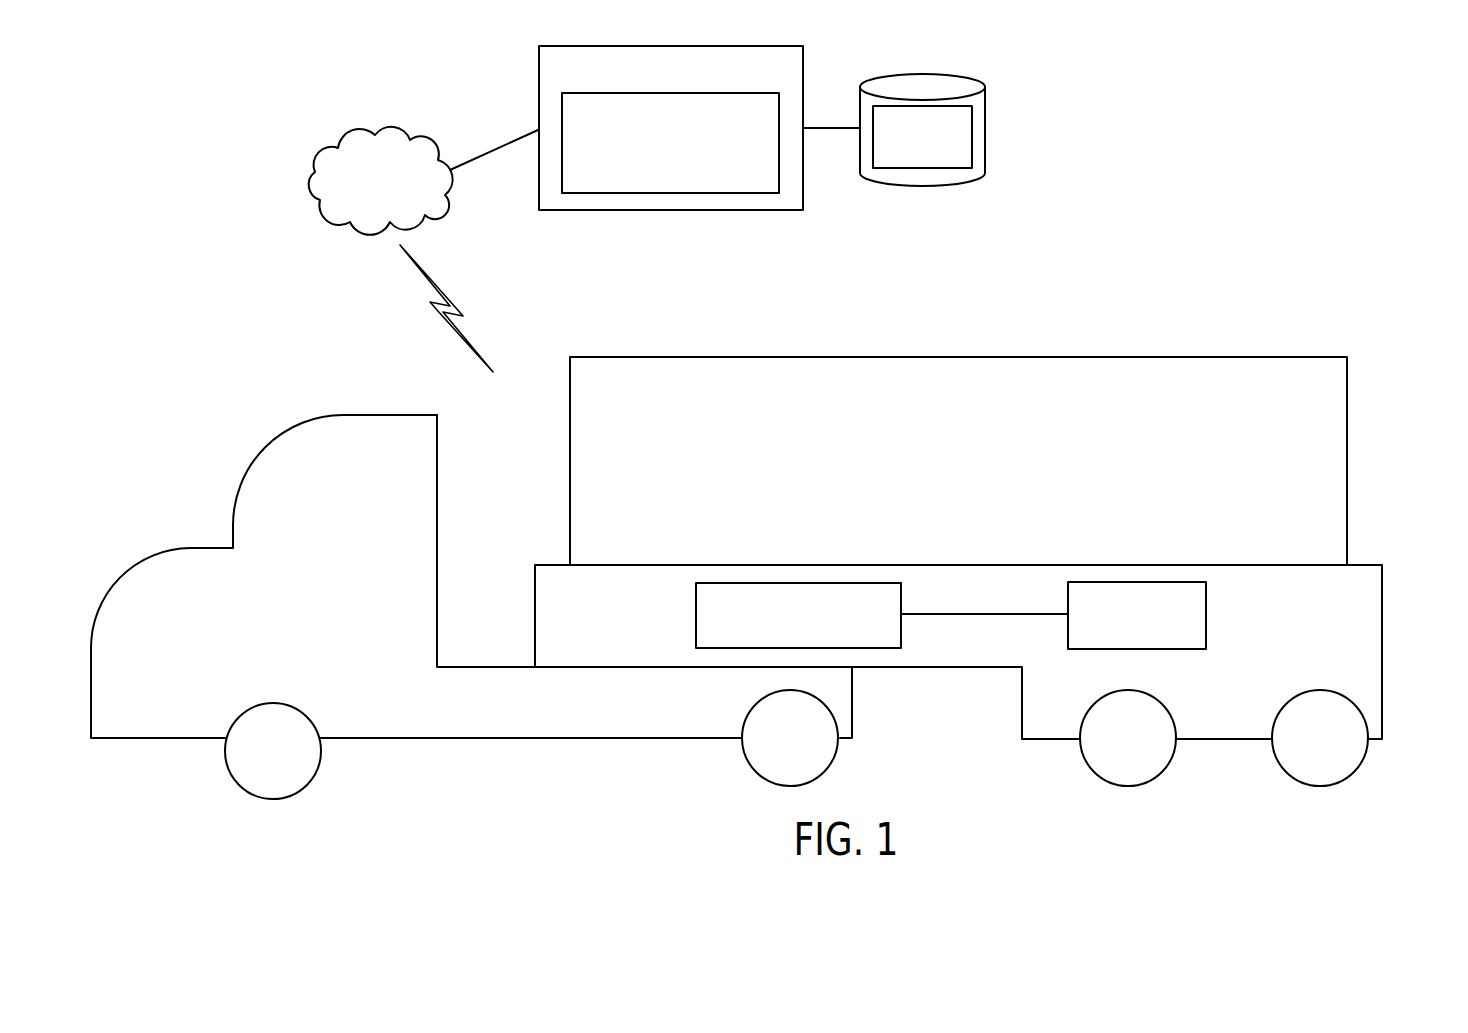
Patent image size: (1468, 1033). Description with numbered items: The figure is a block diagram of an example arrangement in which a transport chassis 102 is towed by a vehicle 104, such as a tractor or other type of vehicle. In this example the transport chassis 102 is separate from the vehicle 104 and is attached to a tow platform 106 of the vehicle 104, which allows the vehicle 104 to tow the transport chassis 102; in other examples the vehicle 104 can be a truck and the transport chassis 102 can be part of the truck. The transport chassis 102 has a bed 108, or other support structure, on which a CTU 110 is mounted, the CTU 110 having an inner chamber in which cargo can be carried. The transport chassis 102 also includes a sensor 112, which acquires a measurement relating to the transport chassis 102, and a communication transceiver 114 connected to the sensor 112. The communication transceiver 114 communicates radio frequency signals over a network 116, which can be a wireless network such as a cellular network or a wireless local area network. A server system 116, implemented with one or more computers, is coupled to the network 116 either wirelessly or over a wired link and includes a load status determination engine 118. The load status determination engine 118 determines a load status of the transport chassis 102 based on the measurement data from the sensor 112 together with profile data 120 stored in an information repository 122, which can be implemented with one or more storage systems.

The transport chassis 102 is at (776, 531).
The vehicle 104 is at (250, 476).
The tow platform 106 is at (508, 705).
The bed 108 is at (1356, 565).
The CTU 110 is at (953, 357).
The sensor 112 is at (1206, 612).
The communication transceiver 114 is at (696, 613).
The network / server system 116 is at (380, 124).
The load status determination engine 118 is at (672, 193).
The profile data 120 is at (923, 168).
The information repository 122 is at (923, 74).